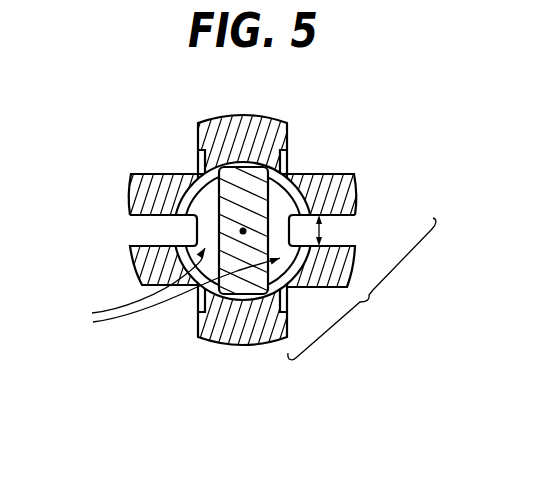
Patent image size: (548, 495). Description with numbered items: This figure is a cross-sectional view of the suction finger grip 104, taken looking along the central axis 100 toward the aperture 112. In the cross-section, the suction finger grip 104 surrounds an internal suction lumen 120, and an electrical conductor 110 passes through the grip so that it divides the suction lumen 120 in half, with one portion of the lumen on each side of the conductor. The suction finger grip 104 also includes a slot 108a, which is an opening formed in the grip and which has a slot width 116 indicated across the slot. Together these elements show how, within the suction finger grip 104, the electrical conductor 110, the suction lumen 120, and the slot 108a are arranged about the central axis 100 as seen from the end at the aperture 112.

The suction finger grip 104 is at (177, 108).
The electrical conductor 110 is at (296, 175).
The slot width 116 is at (323, 231).
The slot 108a is at (347, 236).
The central axis 100 is at (243, 231).
The suction lumen 120 is at (162, 290).
The aperture 112 is at (362, 289).